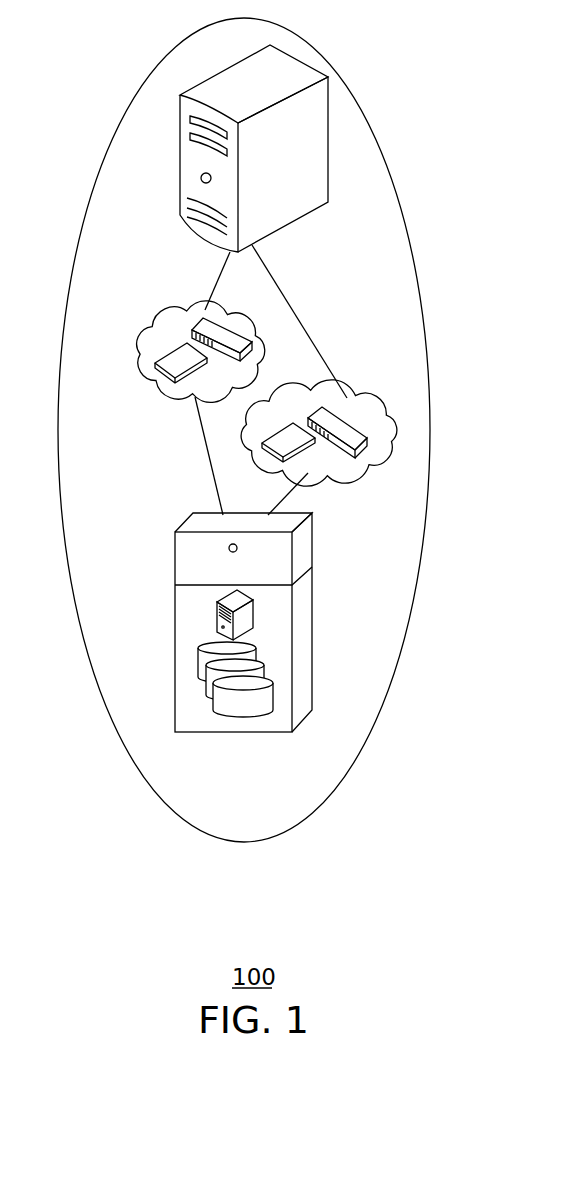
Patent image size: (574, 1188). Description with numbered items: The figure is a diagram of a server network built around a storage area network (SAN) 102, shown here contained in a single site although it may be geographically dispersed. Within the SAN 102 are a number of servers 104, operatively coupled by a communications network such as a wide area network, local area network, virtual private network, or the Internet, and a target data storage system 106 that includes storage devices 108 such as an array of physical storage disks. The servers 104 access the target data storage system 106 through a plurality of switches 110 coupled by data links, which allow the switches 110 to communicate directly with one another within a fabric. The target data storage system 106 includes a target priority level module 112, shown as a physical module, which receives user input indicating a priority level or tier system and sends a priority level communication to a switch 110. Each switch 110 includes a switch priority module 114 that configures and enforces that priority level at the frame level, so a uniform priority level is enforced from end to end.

The storage area network (SAN) 102 is at (367, 118).
The servers 104 is at (278, 63).
The target data storage system 106 is at (312, 545).
The storage devices 108 is at (263, 668).
The switches 110 is at (200, 310).
The target priority level module 112 is at (215, 615).
The switch priority module 114 is at (168, 352).